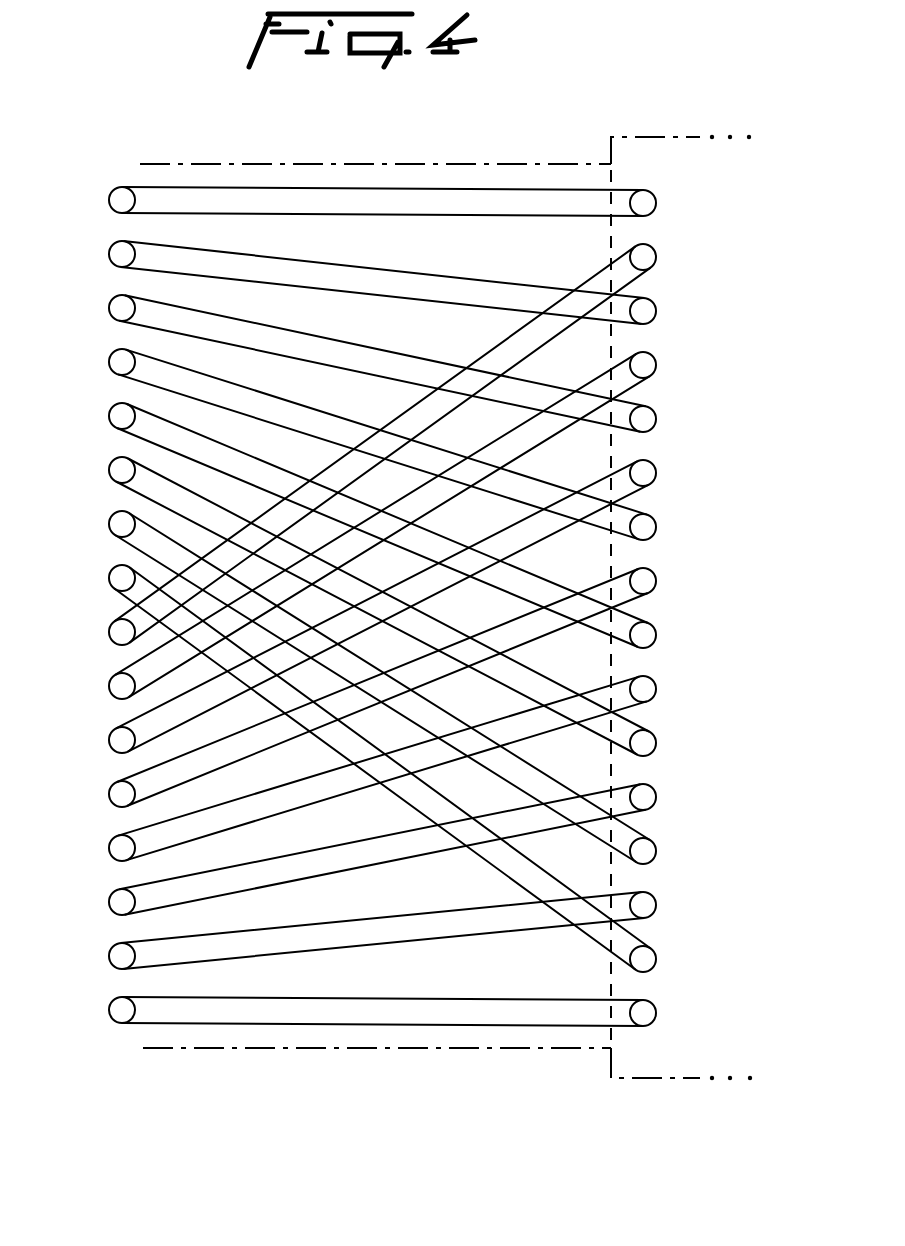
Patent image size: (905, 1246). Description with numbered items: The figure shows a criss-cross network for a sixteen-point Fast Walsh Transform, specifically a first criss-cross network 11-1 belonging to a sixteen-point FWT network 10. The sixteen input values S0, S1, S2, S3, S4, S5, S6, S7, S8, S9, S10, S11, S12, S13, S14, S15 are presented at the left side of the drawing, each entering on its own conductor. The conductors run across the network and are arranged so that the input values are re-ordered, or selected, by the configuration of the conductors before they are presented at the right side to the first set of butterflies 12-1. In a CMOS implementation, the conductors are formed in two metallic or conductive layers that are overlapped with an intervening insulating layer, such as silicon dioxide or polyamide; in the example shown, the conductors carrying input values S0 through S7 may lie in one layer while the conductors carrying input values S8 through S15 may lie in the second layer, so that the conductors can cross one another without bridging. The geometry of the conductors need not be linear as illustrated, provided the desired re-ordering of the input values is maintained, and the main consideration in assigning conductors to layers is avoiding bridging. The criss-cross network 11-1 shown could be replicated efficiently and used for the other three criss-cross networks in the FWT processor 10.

The FWT network 10 is at (350, 694).
The first criss-cross network 11-1 is at (293, 1049).
The first set of butterflies 12-1 is at (678, 1082).
The input value S0 is at (109, 200).
The input value S1 is at (109, 254).
The input value S2 is at (109, 308).
The input value S3 is at (109, 362).
The input value S4 is at (109, 416).
The input value S5 is at (109, 470).
The input value S6 is at (109, 524).
The input value S7 is at (109, 578).
The input value S8 is at (109, 632).
The input value S9 is at (109, 686).
The input value S10 is at (109, 740).
The input value S11 is at (109, 794).
The input value S12 is at (109, 848).
The input value S13 is at (109, 902).
The input value S14 is at (109, 956).
The input value S15 is at (350, 1014).